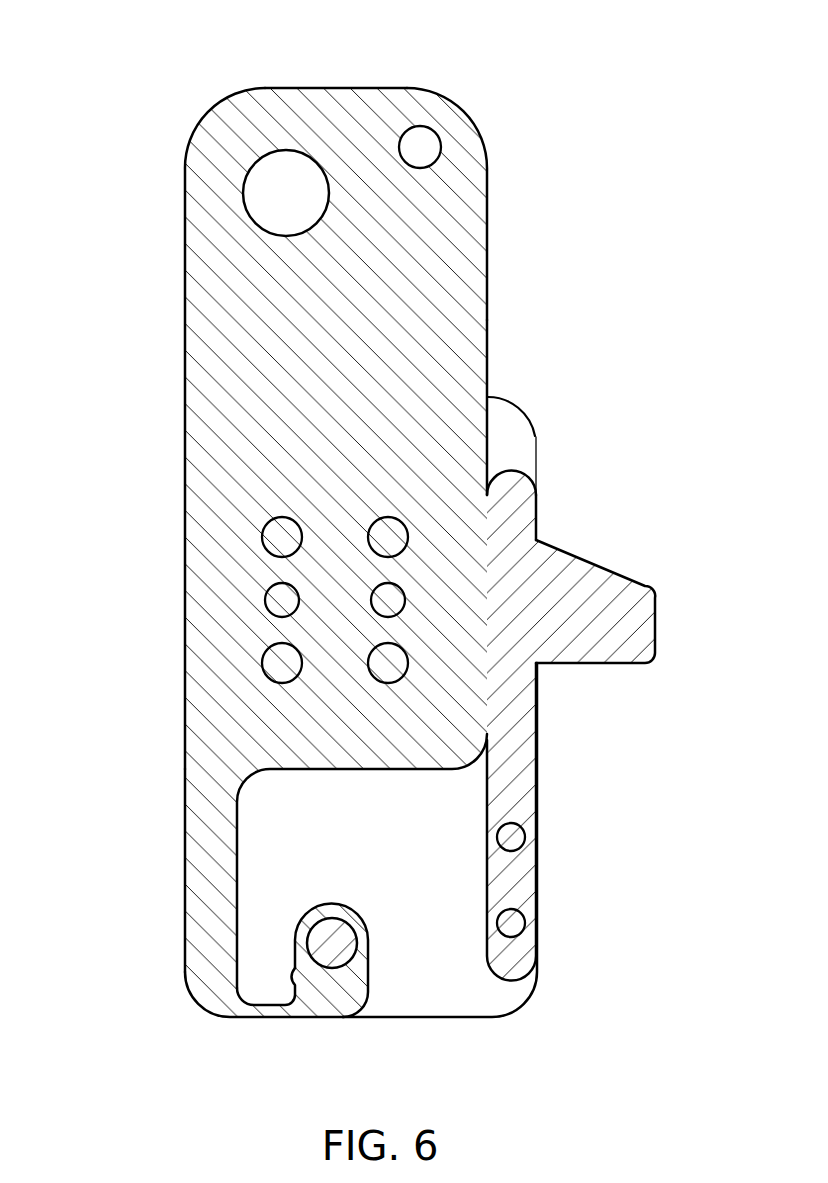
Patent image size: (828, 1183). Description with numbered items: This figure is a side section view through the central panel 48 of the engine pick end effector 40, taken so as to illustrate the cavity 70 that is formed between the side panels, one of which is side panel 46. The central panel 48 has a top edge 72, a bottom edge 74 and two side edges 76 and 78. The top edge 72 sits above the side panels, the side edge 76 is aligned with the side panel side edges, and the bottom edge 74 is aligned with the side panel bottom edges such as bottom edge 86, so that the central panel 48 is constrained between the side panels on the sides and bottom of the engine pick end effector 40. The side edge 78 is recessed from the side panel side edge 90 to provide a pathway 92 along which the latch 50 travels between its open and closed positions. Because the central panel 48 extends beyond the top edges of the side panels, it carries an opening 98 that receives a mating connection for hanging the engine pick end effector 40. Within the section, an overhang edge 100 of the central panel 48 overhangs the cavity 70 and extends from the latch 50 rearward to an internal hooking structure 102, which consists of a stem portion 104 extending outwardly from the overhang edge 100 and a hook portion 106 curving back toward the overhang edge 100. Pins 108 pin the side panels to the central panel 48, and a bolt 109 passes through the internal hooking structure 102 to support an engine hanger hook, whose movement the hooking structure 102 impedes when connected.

The engine pick end effector 40 is at (612, 104).
The top edge 72 is at (337, 88).
The side edge 76 is at (186, 468).
The central panel 48 is at (476, 293).
The side edge 78 is at (487, 348).
The opening 98 is at (253, 195).
The pathway 92 is at (523, 415).
The side panel 46 is at (524, 438).
The side edge 90 is at (537, 477).
The latch 50 is at (523, 707).
The cavity 70 is at (462, 806).
The overhang edge 100 is at (359, 769).
The internal hooking structure 102 is at (170, 861).
The stem portion 104 is at (192, 933).
The bottom edge 74 is at (251, 1017).
The bottom edge 86 is at (428, 1017).
The hook portion 106 is at (325, 1007).
The bolt 109 is at (331, 918).
The pins 108 is at (282, 517).